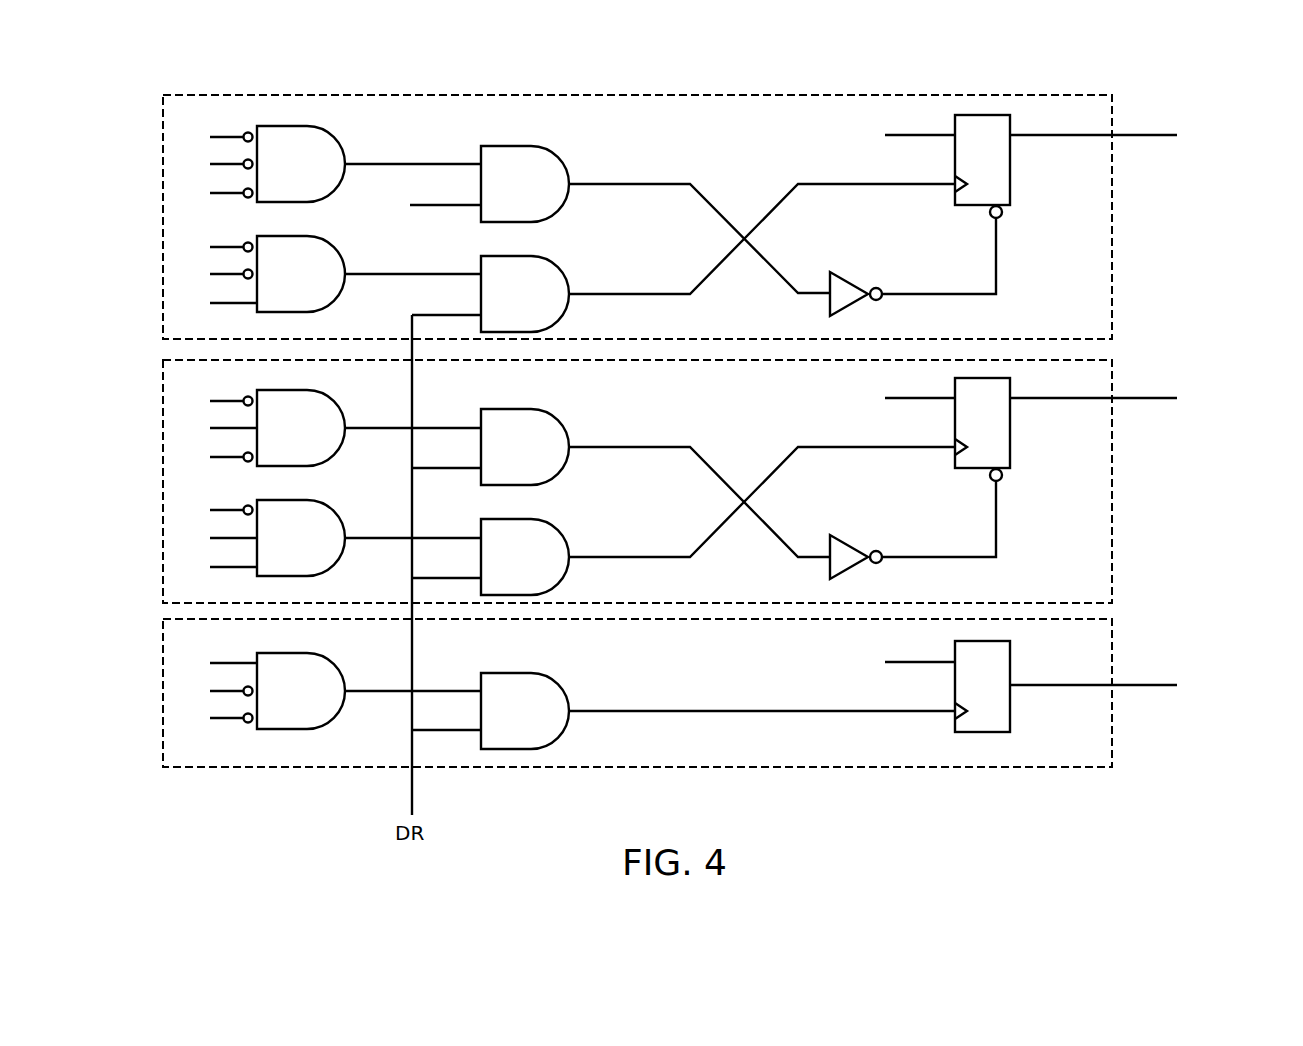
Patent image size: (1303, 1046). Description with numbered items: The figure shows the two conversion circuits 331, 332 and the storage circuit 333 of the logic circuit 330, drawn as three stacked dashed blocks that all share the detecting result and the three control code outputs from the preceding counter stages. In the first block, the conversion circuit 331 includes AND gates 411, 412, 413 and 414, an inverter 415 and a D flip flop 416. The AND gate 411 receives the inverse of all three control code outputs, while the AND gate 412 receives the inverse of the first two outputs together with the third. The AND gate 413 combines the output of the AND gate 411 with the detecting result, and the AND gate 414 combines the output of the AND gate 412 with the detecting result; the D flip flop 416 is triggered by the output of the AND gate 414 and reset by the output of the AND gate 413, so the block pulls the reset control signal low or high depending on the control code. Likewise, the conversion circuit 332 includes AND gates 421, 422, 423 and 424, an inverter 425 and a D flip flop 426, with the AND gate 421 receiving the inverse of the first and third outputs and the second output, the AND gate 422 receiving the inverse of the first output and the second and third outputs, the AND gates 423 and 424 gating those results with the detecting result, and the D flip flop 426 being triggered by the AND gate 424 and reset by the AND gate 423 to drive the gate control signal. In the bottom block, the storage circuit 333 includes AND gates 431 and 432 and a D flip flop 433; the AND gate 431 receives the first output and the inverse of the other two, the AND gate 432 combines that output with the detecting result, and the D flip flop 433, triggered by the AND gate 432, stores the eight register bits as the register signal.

The logic circuit 330 is at (138, 94).
The conversion circuit 331 is at (1112, 247).
The conversion circuit 332 is at (1112, 511).
The storage circuit 333 is at (1112, 742).
The AND gate 411 is at (331, 133).
The AND gate 412 is at (331, 244).
The AND gate 413 is at (556, 153).
The AND gate 414 is at (556, 263).
The inverter 415 is at (851, 271).
The D flip flop 416 is at (1012, 186).
The AND gate 421 is at (331, 397).
The AND gate 422 is at (331, 507).
The AND gate 423 is at (556, 415).
The AND gate 424 is at (556, 525).
The inverter 425 is at (851, 534).
The D flip flop 426 is at (1012, 448).
The AND gate 431 is at (331, 659).
The AND gate 432 is at (556, 680).
The D flip flop 433 is at (1012, 661).